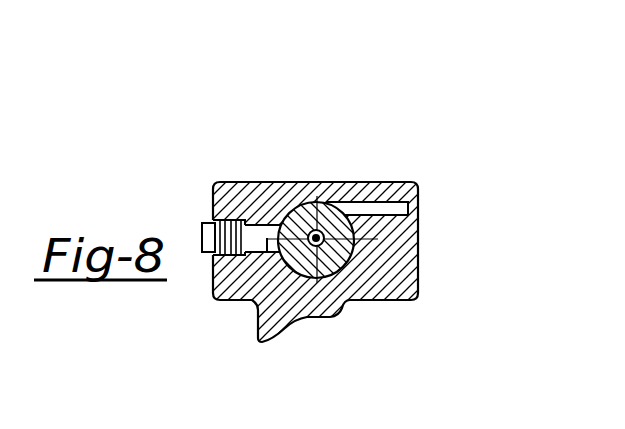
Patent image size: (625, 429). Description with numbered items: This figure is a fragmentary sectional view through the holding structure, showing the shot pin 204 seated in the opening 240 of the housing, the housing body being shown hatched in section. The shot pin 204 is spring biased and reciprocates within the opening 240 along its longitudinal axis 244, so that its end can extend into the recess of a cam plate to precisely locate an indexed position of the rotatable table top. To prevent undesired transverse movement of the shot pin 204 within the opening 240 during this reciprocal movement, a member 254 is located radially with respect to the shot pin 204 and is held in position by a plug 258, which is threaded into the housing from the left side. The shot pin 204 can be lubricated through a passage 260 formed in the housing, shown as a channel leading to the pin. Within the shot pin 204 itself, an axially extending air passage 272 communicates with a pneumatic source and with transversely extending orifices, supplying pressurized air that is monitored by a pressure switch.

The shot pin 204 is at (318, 203).
The opening 240 is at (316, 246).
The axis 244 is at (320, 243).
The member 254 is at (256, 233).
The plug 258 is at (212, 210).
The passage 260 is at (378, 204).
The air passage 272 is at (322, 238).